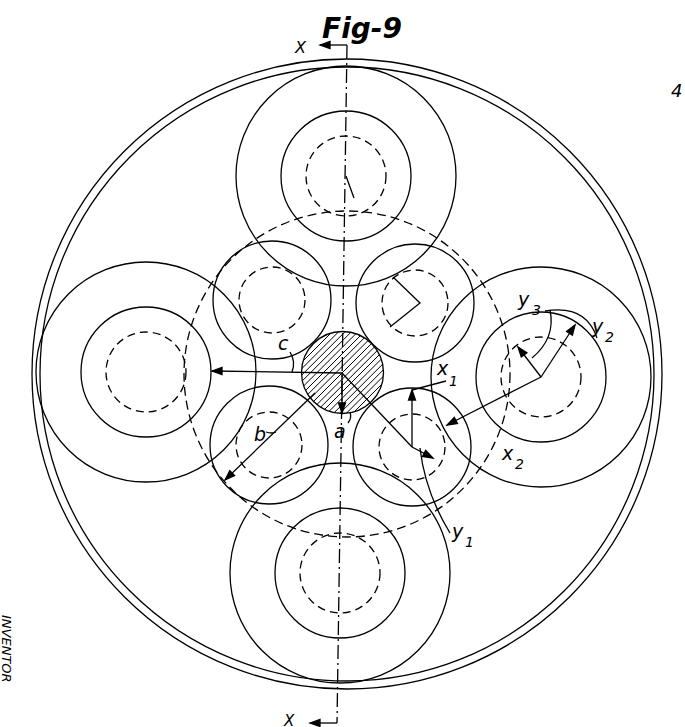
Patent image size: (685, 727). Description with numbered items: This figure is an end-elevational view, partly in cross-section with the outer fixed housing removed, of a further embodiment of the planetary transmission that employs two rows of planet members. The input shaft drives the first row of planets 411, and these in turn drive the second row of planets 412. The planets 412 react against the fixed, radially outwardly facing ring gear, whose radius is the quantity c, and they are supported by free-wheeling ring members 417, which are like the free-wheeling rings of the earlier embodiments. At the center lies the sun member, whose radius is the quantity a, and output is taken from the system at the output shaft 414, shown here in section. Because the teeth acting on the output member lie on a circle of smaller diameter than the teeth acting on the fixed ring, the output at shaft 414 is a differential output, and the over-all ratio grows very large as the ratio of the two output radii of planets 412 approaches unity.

The first-row planet member 411 is at (242, 250).
The second-row planet member 412 is at (445, 168).
The output shaft 414 is at (330, 338).
The free-wheeling ring member 417 is at (608, 207).